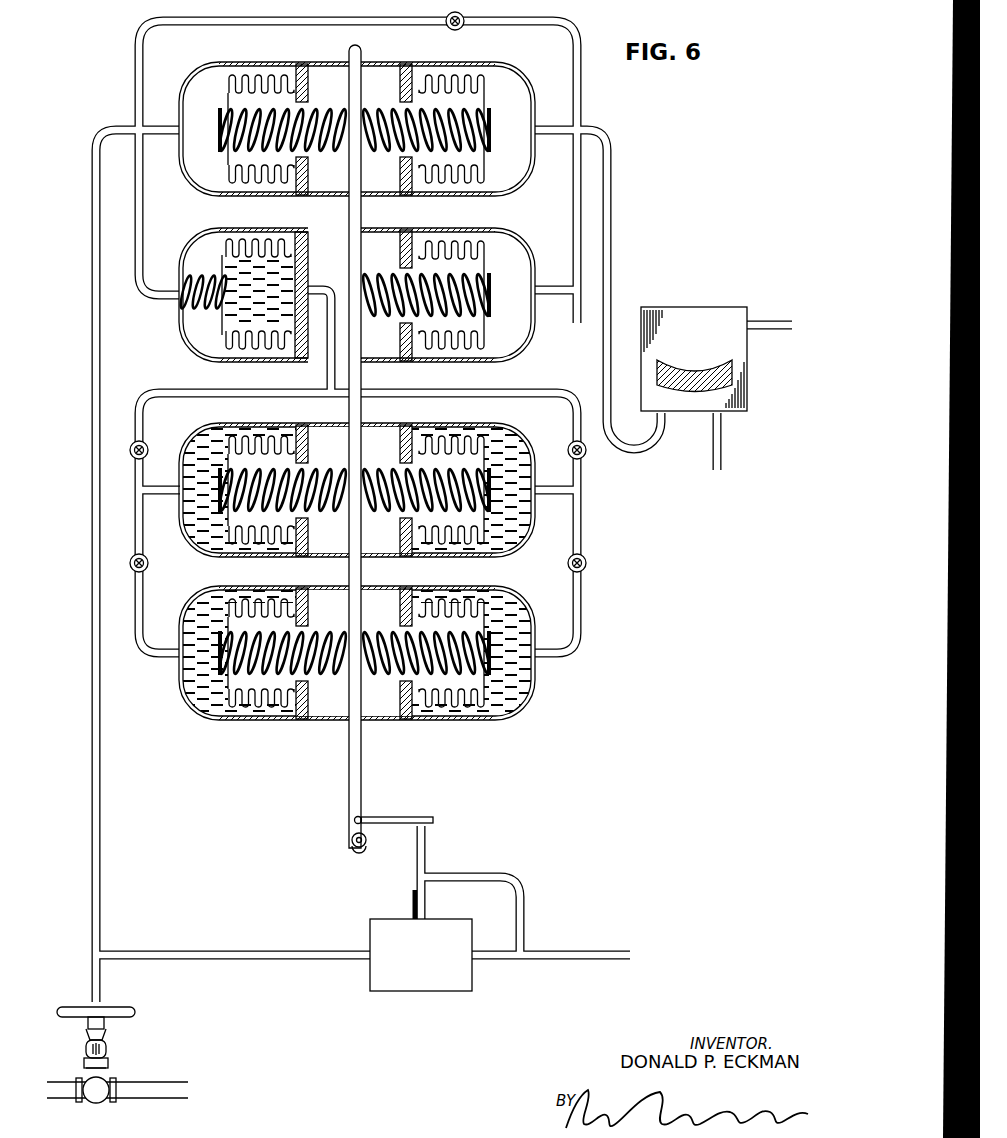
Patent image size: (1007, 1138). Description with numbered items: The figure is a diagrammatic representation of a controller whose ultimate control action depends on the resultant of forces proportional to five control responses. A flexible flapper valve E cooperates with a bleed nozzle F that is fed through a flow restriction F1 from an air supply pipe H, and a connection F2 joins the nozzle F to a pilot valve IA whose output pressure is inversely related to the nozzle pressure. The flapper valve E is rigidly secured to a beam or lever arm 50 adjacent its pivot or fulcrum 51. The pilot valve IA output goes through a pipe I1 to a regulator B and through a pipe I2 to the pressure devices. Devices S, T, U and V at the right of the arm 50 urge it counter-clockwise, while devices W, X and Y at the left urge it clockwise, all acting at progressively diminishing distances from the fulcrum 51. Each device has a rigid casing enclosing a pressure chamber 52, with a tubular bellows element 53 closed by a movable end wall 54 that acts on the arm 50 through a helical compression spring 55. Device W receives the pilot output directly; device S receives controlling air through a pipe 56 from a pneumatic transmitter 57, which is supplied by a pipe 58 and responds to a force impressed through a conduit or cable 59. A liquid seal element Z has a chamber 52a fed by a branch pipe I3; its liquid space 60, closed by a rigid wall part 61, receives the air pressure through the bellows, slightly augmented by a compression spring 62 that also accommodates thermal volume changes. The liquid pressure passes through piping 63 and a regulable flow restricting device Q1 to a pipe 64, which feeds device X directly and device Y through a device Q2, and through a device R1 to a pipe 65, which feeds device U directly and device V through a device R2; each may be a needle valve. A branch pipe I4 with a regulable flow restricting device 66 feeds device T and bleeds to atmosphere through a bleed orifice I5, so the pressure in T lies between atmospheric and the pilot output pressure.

The lever arm 50 is at (360, 50).
The pivot 51 is at (350, 841).
The pressure chamber 52 is at (195, 172).
The chamber 52a is at (215, 352).
The tubular bellows element 53 is at (466, 184).
The movable end wall 54 is at (488, 114).
The helical compression spring 55 is at (364, 110).
The pipe 56 is at (634, 450).
The pneumatic transmitter 57 is at (690, 312).
The pipe 58 is at (720, 440).
The conduit or cable 59 is at (765, 320).
The space 60 is at (290, 276).
The rigid wall part 61 is at (308, 235).
The compression spring 62 is at (206, 308).
The piping 63 is at (328, 368).
The pipe 64 is at (141, 523).
The pipe 65 is at (579, 523).
The regulable flow restricting device 66 is at (458, 28).
The fluid pressure device W is at (190, 72).
The fluid pressure device S is at (518, 80).
The liquid seal element Z is at (188, 240).
The fluid pressure device T is at (525, 236).
The fluid pressure device X is at (192, 440).
The fluid pressure device U is at (522, 440).
The fluid pressure device Y is at (188, 604).
The fluid pressure device V is at (530, 605).
The regulable flow restricting device Q1 is at (131, 450).
The regulable flow restricting device Q2 is at (131, 563).
The flow restricting device R1 is at (585, 452).
The regulable flow restricting device R2 is at (587, 563).
The pipe I1 is at (272, 950).
The pipe I2 is at (100, 860).
The branch pipe I3 is at (136, 232).
The branch pipe I4 is at (272, 26).
The bleed orifice I5 is at (575, 320).
The flapper valve E is at (403, 818).
The bleed nozzle F is at (424, 860).
The flow restriction F1 is at (462, 875).
The connection F2 is at (418, 898).
The air supply pipe H is at (572, 950).
The pilot valve IA is at (440, 985).
The regulator B is at (108, 1080).